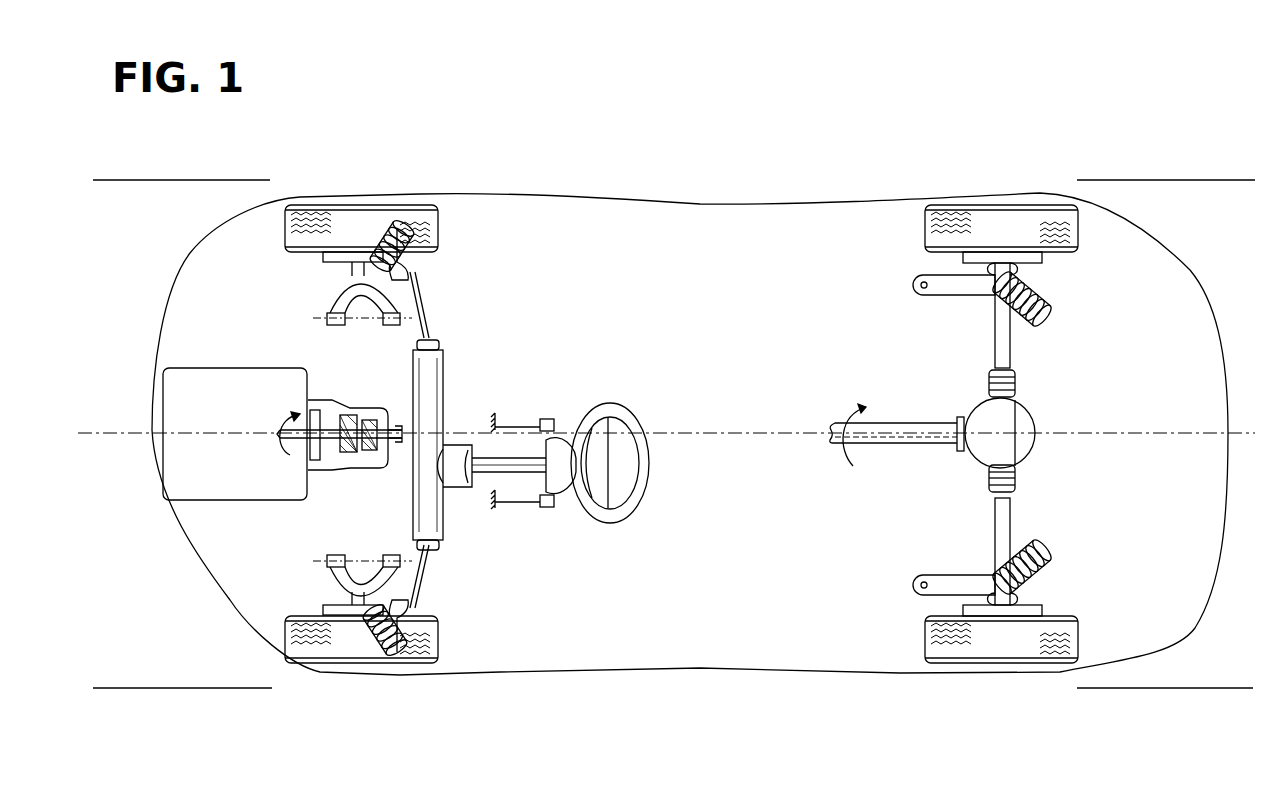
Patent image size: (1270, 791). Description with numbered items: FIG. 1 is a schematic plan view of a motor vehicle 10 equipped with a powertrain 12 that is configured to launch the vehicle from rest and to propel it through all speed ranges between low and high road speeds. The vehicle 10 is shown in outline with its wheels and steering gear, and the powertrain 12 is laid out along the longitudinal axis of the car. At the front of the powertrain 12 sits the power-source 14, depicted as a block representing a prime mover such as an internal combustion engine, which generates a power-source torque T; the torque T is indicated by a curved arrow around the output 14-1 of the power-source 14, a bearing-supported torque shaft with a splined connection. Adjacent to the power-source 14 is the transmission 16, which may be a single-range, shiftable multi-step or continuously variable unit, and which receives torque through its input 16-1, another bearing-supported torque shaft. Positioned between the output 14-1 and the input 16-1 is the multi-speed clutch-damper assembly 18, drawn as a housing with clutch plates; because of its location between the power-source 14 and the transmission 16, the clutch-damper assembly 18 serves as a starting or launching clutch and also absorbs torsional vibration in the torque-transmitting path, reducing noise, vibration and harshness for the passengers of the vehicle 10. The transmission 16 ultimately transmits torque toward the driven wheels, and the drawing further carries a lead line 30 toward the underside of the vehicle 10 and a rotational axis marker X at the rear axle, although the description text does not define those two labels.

The vehicle 10 is at (1002, 123).
The powertrain 12 is at (708, 388).
The power-source 14 is at (207, 383).
The output of the power-source 14-1 is at (303, 452).
The transmission 16 is at (355, 423).
The input of the transmission 16-1 is at (331, 469).
The multi-speed clutch-damper assembly 18 is at (313, 408).
The vehicle floor / road 30 is at (772, 637).
The power-source torque T is at (298, 420).
The drive axle axis X is at (1108, 436).